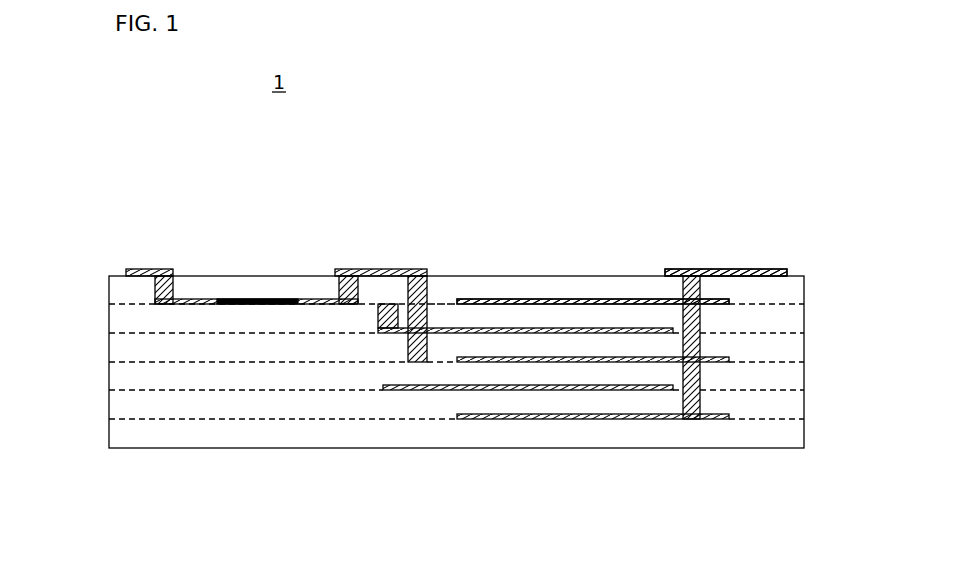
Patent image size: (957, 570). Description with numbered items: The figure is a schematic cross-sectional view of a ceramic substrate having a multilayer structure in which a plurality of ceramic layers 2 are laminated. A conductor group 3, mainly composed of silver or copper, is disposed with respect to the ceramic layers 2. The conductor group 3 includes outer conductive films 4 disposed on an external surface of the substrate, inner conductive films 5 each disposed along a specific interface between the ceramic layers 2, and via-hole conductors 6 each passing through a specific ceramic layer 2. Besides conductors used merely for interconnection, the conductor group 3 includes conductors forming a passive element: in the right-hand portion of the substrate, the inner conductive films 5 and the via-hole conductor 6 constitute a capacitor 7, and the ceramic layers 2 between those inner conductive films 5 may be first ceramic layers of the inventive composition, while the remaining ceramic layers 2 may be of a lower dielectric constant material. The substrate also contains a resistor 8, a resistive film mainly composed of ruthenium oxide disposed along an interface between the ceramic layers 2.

The ceramic layers 2 is at (787, 405).
The conductor group 3 is at (774, 267).
The outer conductive films 4 is at (380, 270).
The inner conductive films 5 is at (533, 388).
The via-hole conductors 6 is at (155, 283).
The capacitor 7 is at (572, 297).
The resistor 8 is at (238, 300).